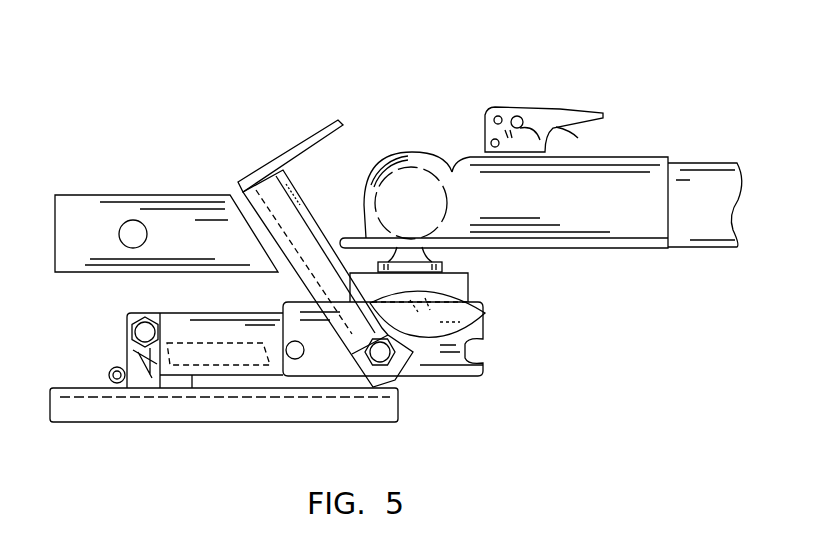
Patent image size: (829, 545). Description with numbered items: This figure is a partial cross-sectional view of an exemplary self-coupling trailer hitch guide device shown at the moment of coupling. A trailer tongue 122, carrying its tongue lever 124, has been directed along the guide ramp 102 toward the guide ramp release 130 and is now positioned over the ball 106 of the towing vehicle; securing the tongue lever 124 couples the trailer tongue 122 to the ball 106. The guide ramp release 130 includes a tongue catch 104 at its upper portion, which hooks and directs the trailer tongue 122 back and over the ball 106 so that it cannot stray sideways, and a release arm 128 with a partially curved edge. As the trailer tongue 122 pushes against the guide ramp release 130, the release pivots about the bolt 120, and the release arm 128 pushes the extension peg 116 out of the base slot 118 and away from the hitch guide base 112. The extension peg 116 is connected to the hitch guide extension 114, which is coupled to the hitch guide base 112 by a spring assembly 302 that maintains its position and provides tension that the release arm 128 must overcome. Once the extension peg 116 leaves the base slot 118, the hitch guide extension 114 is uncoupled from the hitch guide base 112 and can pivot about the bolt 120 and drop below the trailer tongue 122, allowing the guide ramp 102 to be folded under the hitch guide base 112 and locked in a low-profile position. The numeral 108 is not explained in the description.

The guide ramp 102 is at (87, 397).
The tongue catch 104 is at (307, 142).
The ball 106 is at (443, 267).
The receiver tube 108 is at (185, 193).
The hitch guide base 112 is at (460, 370).
The hitch guide extension 114 is at (210, 327).
The extension peg 116 is at (290, 359).
The base slot 118 is at (466, 350).
The bolt 120 is at (407, 378).
The trailer tongue 122 is at (624, 154).
The tongue lever 124 is at (542, 110).
The release arm 128 is at (460, 320).
The guide ramp release 130 is at (314, 208).
The spring assembly 302 is at (222, 348).